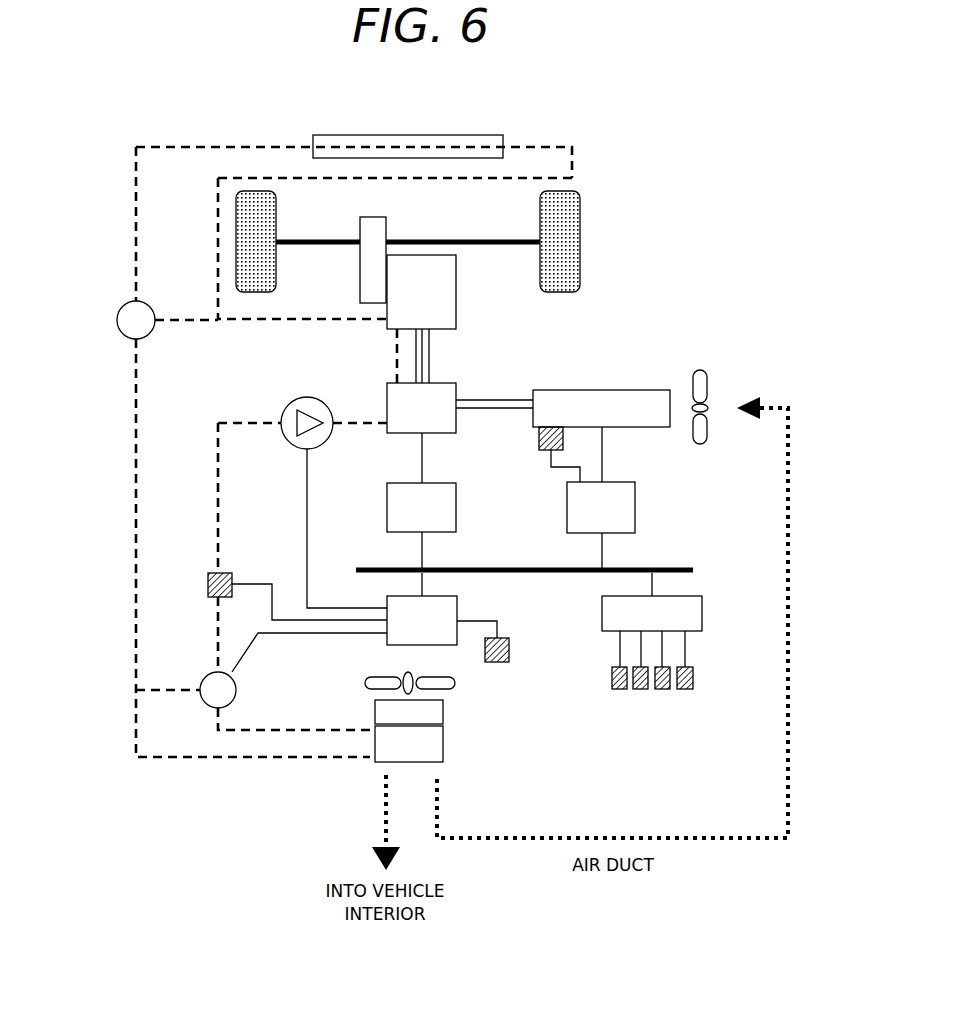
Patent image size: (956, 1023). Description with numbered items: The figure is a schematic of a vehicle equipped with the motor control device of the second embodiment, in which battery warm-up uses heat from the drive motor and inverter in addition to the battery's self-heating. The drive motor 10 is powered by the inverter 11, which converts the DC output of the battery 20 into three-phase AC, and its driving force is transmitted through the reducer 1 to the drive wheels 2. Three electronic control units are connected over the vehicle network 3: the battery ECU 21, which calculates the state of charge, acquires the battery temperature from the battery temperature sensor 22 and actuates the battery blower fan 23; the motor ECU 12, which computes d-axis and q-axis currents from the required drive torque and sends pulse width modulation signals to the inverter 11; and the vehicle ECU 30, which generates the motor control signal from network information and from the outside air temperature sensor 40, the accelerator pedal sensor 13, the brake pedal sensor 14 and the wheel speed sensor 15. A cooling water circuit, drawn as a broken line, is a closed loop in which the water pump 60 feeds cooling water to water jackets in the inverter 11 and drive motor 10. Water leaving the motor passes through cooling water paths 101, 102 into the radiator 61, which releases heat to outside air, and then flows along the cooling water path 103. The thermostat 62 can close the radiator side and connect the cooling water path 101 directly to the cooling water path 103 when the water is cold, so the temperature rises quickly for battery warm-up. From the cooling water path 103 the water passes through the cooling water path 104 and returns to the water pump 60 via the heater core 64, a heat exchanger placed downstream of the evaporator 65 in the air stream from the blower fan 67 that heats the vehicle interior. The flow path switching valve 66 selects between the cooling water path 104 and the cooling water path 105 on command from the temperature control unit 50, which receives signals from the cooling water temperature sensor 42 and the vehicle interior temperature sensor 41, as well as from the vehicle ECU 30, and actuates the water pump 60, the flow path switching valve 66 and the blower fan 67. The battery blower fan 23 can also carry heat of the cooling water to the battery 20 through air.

The reducer 1 is at (381, 225).
The drive wheels 2 is at (582, 235).
The vehicle network 3 is at (665, 568).
The drive motor 10 is at (458, 290).
The inverter 11 is at (458, 392).
The motor ECU 12 is at (458, 508).
The accelerator pedal sensor 13 is at (620, 690).
The brake pedal sensor 14 is at (641, 690).
The wheel speed sensor 15 is at (662, 690).
The battery 20 is at (606, 390).
The battery ECU 21 is at (632, 507).
The battery temperature sensor 22 is at (539, 440).
The battery blower fan 23 is at (700, 382).
The vehicle ECU 30 is at (700, 613).
The outside air temperature sensor 40 is at (685, 690).
The vehicle interior temperature sensor 41 is at (509, 650).
The cooling water temperature sensor 42 is at (208, 575).
The temperature control unit 50 is at (452, 606).
The water pump 60 is at (292, 418).
The radiator 61 is at (425, 135).
The thermostat 62 is at (125, 310).
The heater core 64 is at (443, 744).
The evaporator 65 is at (443, 712).
The flow path switching valve 66 is at (234, 691).
The blower fan 67 is at (455, 685).
The cooling water path 101 is at (308, 341).
The cooling water path 102 is at (210, 216).
The cooling water path 103 is at (109, 387).
The cooling water path 104 is at (130, 775).
The cooling water path 105 is at (181, 685).